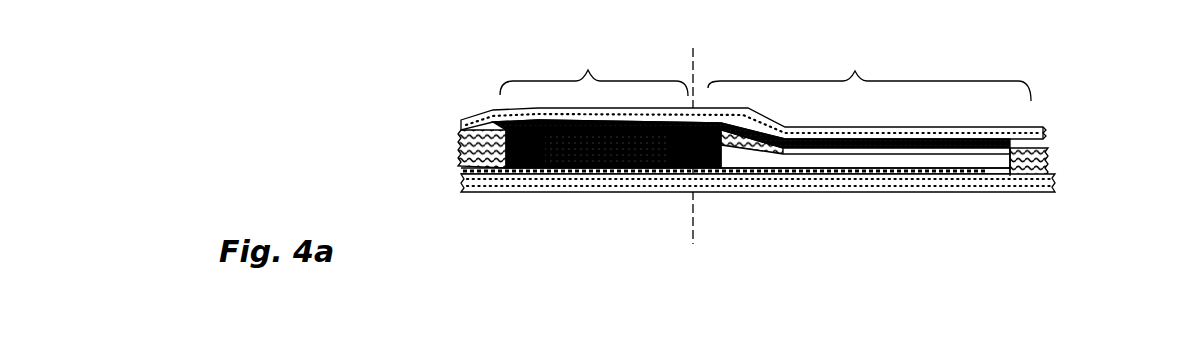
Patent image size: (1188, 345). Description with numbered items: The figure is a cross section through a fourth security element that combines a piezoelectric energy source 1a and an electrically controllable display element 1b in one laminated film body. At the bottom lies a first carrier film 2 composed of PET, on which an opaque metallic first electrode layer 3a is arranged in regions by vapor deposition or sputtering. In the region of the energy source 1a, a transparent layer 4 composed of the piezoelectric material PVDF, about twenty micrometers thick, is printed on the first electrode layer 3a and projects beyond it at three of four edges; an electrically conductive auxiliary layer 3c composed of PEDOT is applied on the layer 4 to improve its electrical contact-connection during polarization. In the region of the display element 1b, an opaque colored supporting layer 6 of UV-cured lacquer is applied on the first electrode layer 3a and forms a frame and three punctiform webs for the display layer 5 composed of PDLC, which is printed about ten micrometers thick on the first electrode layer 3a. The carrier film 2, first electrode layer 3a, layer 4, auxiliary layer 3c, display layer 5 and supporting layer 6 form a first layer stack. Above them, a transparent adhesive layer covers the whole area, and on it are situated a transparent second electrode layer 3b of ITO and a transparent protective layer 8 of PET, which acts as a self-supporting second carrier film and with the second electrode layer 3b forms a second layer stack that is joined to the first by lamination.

The piezoelectric energy source 1a is at (869, 65).
The electrically controllable display element 1b is at (594, 61).
The first carrier film 2 is at (796, 178).
The first electrode layer 3a is at (750, 166).
The second electrode layer 3b is at (465, 125).
The electrically conductive auxiliary layer 3c is at (892, 141).
The transparent layer composed of piezoelectric material 4 is at (984, 160).
The display layer 5 is at (602, 160).
The supporting layer 6 is at (512, 160).
The protective layer 8 is at (456, 118).